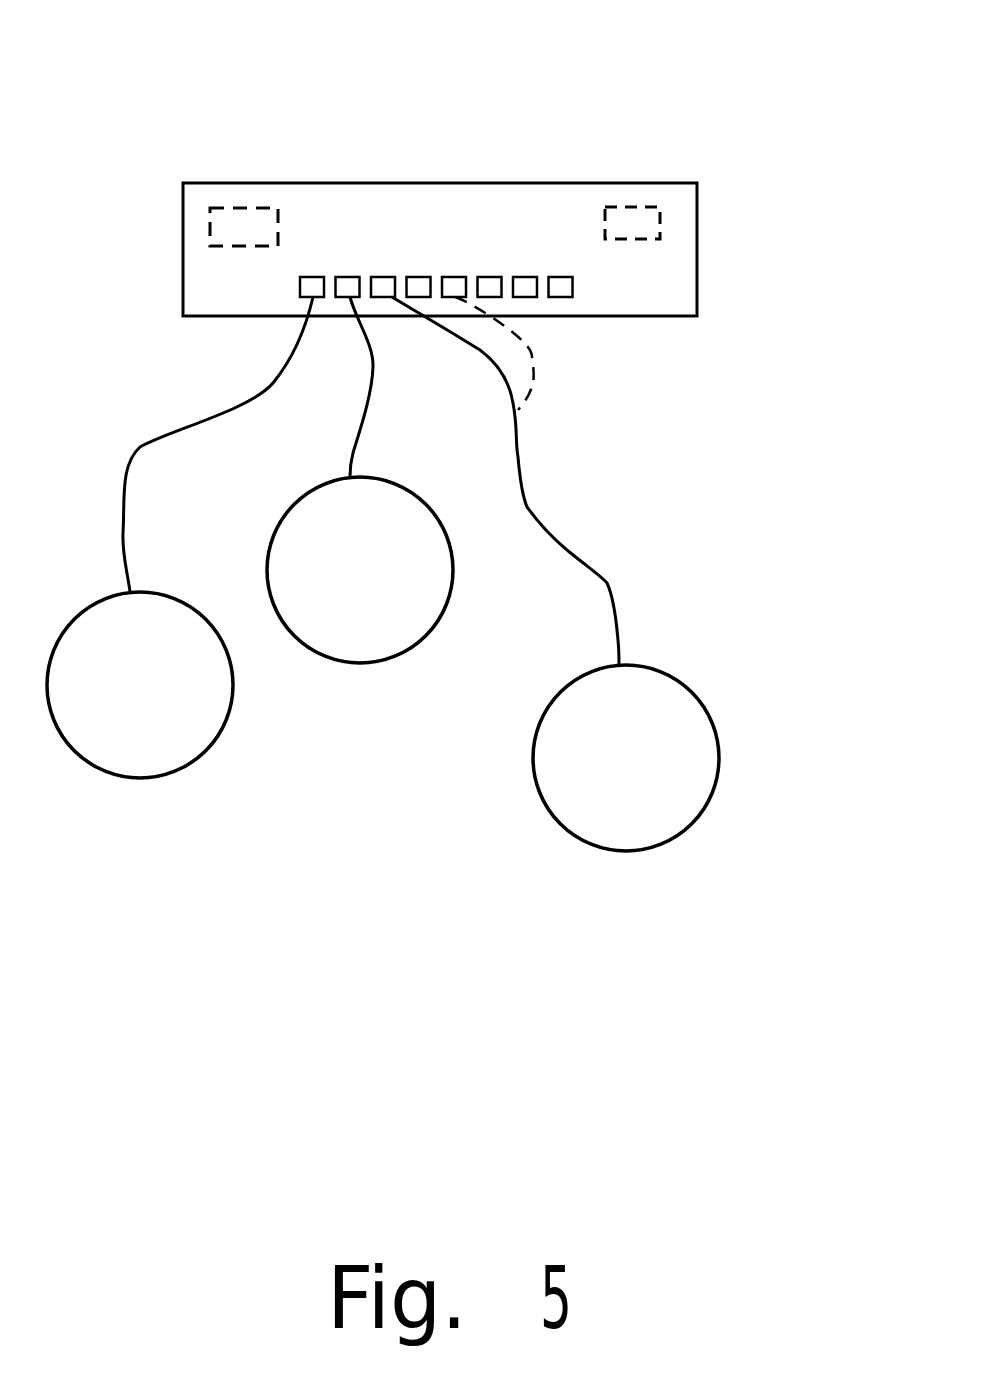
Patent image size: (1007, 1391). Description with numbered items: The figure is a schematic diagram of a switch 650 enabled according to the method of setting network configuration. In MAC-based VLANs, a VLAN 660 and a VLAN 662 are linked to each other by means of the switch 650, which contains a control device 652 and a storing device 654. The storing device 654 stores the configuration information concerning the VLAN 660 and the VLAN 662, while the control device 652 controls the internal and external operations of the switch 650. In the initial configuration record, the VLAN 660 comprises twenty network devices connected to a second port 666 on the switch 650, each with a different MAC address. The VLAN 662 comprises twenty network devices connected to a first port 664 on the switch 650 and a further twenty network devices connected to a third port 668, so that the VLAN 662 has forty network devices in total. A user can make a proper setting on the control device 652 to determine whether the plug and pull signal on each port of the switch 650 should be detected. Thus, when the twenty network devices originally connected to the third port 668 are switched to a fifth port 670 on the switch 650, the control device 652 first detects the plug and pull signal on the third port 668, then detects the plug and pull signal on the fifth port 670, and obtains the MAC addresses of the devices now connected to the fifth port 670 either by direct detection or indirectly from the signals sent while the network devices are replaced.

The switch 650 is at (682, 255).
The control device 652 is at (640, 220).
The storing device 654 is at (239, 207).
The VLAN 660 is at (360, 633).
The VLAN 662 is at (383, 653).
The first port 664 is at (313, 277).
The second port 666 is at (353, 277).
The third port 668 is at (385, 277).
The fifth port 670 is at (453, 277).